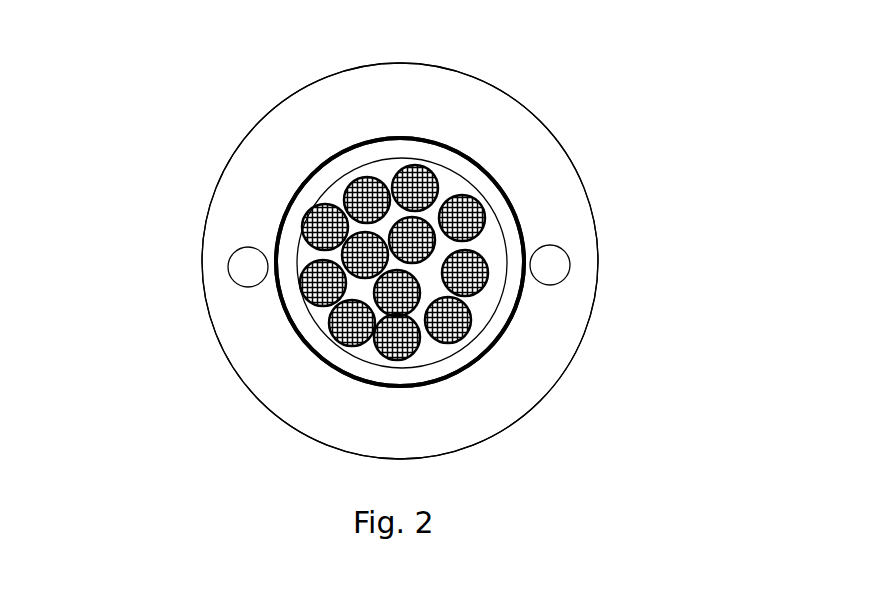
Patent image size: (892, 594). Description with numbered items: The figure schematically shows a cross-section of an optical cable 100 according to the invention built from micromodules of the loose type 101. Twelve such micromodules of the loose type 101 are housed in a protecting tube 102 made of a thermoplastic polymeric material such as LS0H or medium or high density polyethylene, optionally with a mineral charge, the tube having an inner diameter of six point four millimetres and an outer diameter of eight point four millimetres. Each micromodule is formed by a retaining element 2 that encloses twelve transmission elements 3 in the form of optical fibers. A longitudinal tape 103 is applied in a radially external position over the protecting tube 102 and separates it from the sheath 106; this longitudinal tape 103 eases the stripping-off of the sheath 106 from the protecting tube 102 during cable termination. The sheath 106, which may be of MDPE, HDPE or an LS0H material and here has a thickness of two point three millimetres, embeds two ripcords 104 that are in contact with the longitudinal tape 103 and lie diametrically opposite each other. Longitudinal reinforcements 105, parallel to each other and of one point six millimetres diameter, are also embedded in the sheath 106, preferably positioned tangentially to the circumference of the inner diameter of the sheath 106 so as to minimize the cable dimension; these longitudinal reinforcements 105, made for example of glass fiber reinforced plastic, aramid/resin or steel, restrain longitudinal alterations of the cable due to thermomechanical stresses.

The optical cable 100 is at (216, 86).
The micromodules of the loose type 101 is at (318, 318).
The protecting tube 102 is at (566, 177).
The longitudinal tape 103 is at (318, 262).
The ripcords 104 is at (633, 372).
The longitudinal reinforcements 105 is at (421, 238).
The sheath 106 is at (441, 246).
The retaining element 2 is at (490, 342).
The transmission elements 3 is at (455, 353).